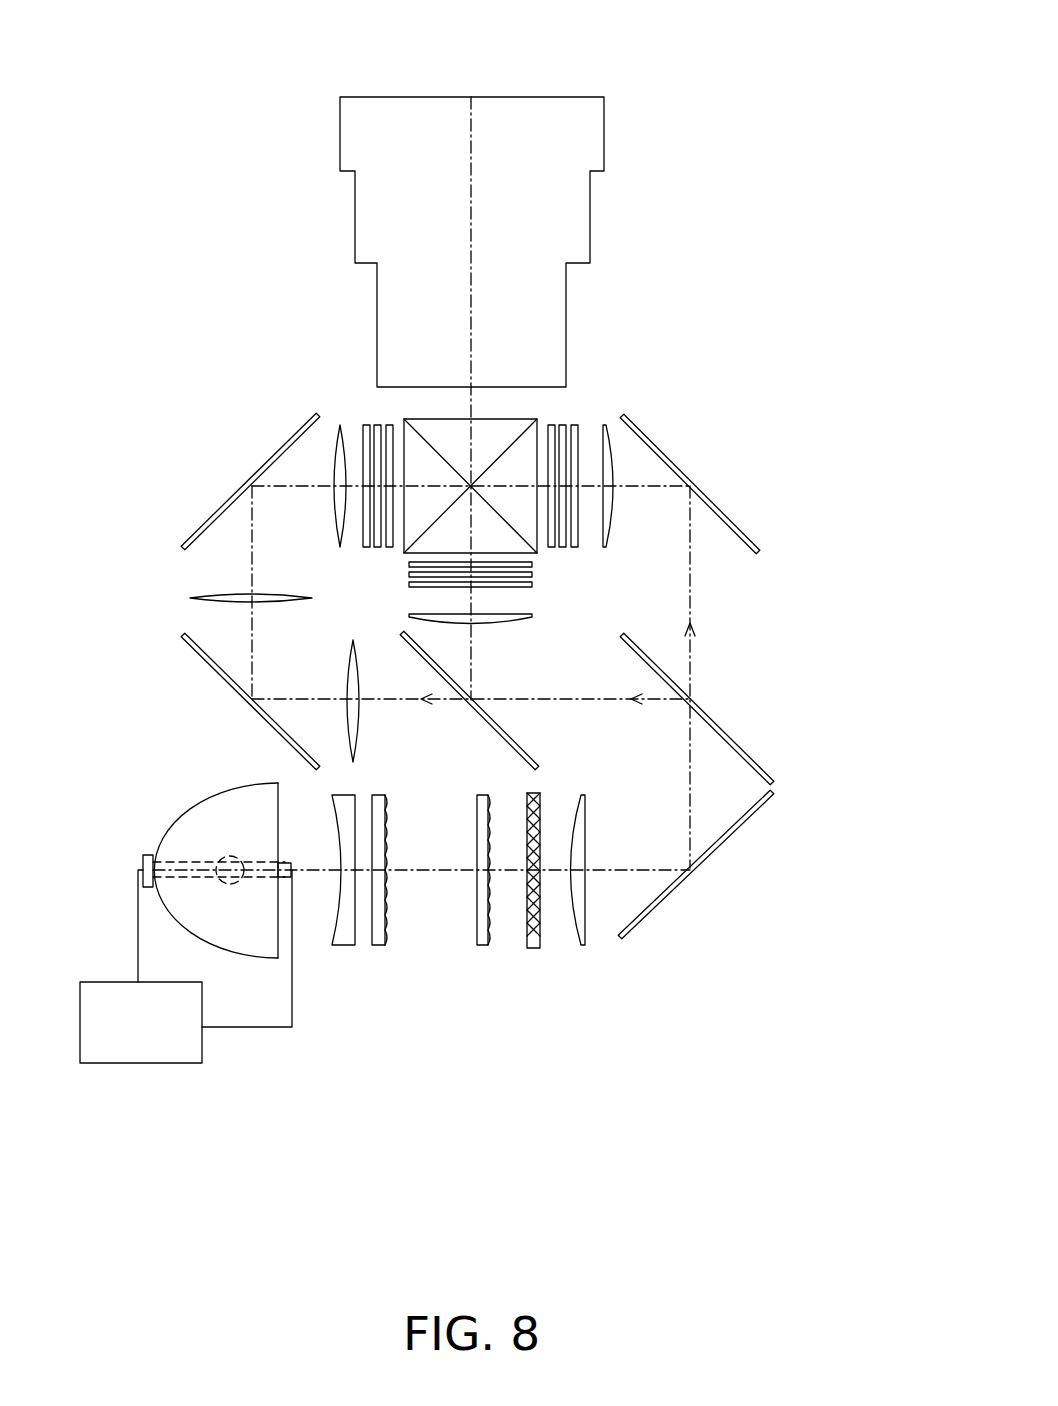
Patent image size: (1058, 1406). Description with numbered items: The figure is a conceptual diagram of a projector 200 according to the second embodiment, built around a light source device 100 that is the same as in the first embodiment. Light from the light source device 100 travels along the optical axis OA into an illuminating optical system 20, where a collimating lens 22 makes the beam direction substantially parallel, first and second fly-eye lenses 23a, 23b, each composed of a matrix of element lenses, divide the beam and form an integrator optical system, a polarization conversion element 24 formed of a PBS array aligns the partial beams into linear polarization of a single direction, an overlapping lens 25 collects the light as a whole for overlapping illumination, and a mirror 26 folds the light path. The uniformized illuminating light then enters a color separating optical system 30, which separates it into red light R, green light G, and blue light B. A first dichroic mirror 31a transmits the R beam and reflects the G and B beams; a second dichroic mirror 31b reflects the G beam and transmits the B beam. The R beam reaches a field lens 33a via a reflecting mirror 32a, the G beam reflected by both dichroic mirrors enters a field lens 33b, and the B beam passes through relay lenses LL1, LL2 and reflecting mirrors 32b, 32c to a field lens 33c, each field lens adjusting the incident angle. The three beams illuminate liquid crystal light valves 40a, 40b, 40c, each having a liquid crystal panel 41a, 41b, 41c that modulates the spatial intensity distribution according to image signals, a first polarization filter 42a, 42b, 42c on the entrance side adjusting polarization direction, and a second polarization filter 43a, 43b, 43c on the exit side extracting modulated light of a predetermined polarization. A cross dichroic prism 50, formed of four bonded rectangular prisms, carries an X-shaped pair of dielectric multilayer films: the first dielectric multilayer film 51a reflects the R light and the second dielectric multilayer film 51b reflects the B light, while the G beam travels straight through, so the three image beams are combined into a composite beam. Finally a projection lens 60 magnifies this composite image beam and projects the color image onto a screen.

The projector 200 is at (893, 24).
The projection lens 60 is at (543, 199).
The cross dichroic prism 50 is at (432, 421).
The first dielectric multilayer film 51a is at (412, 420).
The second dielectric multilayer film 51b is at (523, 418).
The liquid crystal light valve 40a is at (652, 476).
The liquid crystal light valve 40b is at (489, 619).
The liquid crystal light valve 40c is at (273, 528).
The liquid crystal panel 41a is at (570, 510).
The liquid crystal panel 41b is at (533, 576).
The liquid crystal panel 41c is at (378, 472).
The first polarization filter 42a is at (578, 548).
The first polarization filter 42b is at (414, 585).
The first polarization filter 42c is at (367, 550).
The second polarization filter 43a is at (530, 565).
The second polarization filter 43b is at (409, 565).
The second polarization filter 43c is at (378, 552).
The field lens 33a is at (612, 477).
The field lens 33b is at (532, 622).
The field lens 33c is at (330, 505).
The color separating optical system 30 is at (453, 624).
The first dichroic mirror 31a is at (732, 735).
The second dichroic mirror 31b is at (522, 747).
The reflecting mirror 32a is at (745, 521).
The reflecting mirror 32b is at (212, 668).
The reflecting mirror 32c is at (210, 520).
The relay lens LL1 is at (363, 738).
The relay lens LL2 is at (190, 600).
The mirror 26 is at (658, 900).
The illuminating optical system 20 is at (393, 962).
The collimating lens 22 is at (342, 945).
The first fly-eye lens 23a is at (377, 948).
The second fly-eye lens 23b is at (480, 948).
The polarization conversion element 24 is at (532, 948).
The overlapping lens 25 is at (582, 945).
The light source device 100 is at (147, 1069).
The optical axis OA is at (439, 918).
The red light R is at (764, 596).
The green light G is at (534, 686).
The blue light B is at (181, 569).